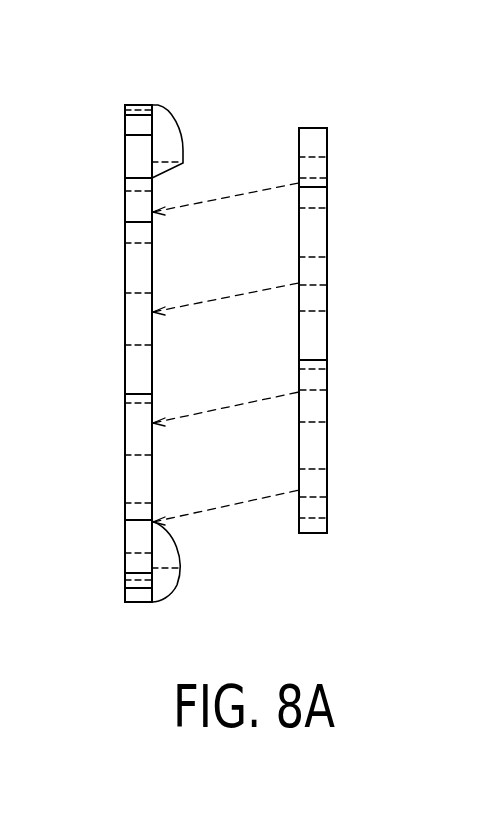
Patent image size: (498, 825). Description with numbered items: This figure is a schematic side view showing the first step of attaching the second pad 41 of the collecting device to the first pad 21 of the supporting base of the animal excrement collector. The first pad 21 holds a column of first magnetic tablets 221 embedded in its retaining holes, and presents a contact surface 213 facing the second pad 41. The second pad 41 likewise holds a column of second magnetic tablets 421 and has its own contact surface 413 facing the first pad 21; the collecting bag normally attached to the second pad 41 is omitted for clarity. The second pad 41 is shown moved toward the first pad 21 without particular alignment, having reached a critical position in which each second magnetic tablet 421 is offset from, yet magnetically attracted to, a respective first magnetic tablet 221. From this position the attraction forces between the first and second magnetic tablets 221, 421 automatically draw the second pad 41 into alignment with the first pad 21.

The first pad 21 is at (125, 146).
The contact surface 213 is at (153, 270).
The first magnetic tablets 221 is at (152, 523).
The second pad 41 is at (327, 141).
The contact surface 413 is at (299, 141).
The second magnetic tablets 421 is at (381, 488).